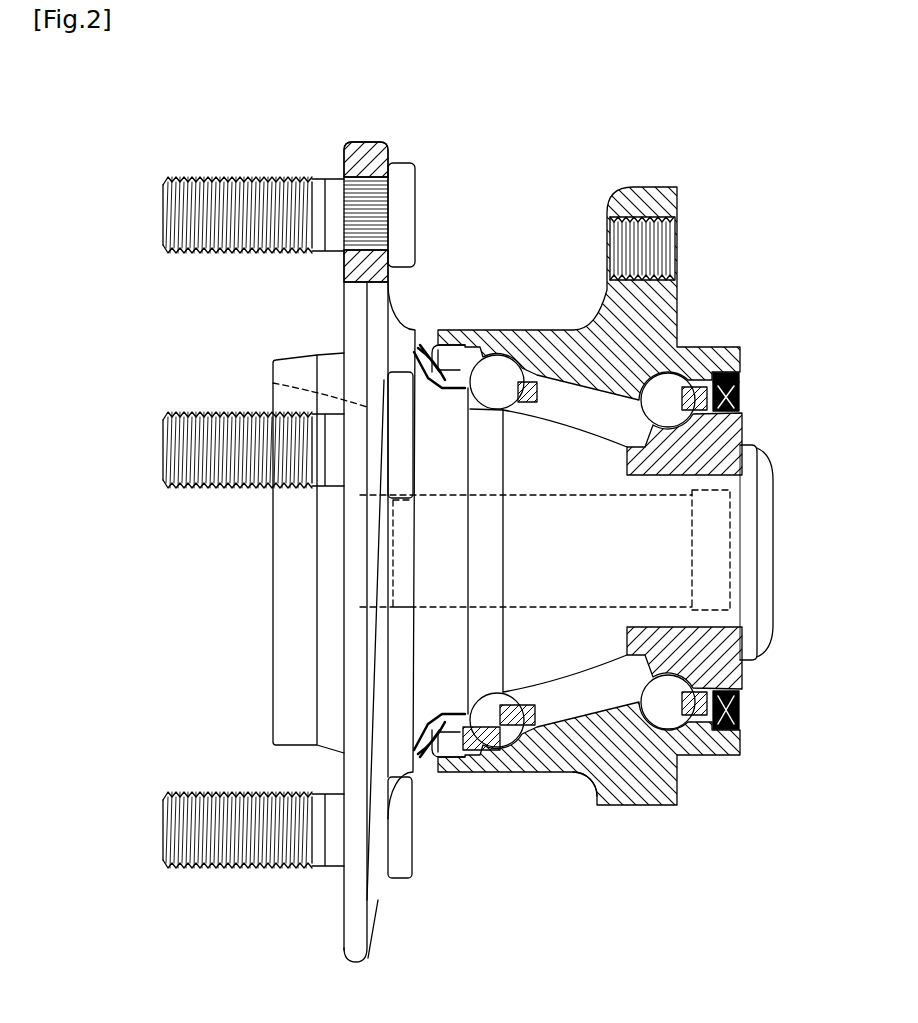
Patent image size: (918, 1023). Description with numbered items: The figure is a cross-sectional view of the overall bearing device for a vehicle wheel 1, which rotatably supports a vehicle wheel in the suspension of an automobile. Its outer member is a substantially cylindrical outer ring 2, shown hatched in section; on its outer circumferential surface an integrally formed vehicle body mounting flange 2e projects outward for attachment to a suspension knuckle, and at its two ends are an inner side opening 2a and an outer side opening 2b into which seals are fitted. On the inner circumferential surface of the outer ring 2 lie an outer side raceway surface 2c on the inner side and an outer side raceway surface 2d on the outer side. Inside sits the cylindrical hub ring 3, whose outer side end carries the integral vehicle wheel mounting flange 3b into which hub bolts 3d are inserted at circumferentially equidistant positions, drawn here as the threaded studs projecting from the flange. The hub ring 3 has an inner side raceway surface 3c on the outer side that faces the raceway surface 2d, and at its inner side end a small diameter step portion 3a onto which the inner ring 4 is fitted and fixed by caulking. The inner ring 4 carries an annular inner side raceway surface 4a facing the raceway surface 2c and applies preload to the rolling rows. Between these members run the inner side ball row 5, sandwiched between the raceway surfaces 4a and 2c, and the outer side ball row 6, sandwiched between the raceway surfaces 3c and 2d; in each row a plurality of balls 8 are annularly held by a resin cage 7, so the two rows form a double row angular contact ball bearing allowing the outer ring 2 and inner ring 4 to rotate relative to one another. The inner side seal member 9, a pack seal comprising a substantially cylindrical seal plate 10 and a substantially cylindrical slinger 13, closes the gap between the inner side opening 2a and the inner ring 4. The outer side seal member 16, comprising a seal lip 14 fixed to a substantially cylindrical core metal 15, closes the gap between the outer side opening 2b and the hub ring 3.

The bearing device for a vehicle wheel 1 is at (63, 86).
The outer ring 2 is at (577, 470).
The inner side opening 2a is at (700, 737).
The outer side opening 2b is at (472, 748).
The outer side raceway surface on the inner side 2c is at (590, 786).
The outer side raceway surface on the outer side 2d is at (510, 748).
The vehicle body mounting flange 2e is at (637, 196).
The hub ring 3 is at (498, 519).
The small diameter step portion 3a is at (745, 470).
The vehicle wheel mounting flange 3b is at (360, 143).
The inner side raceway surface on the outer side 3c is at (484, 400).
The hub bolt 3d is at (245, 183).
The inner ring 4 is at (740, 672).
The inner side raceway surface 4a is at (672, 670).
The inner side ball row 5 is at (733, 310).
The outer side ball row 6 is at (568, 290).
The resin cage 7 is at (533, 383).
The ball 8 is at (505, 370).
The inner side seal member 9 is at (808, 352).
The seal plate 10 is at (742, 372).
The slinger 13 is at (742, 400).
The seal lip 14 is at (421, 352).
The core metal 15 is at (447, 350).
The outer side seal member 16 is at (472, 285).